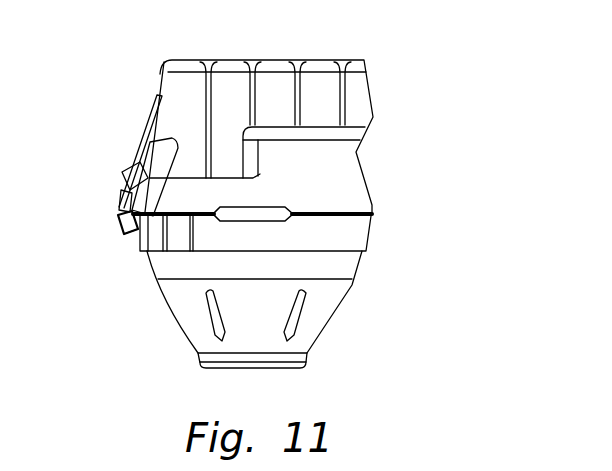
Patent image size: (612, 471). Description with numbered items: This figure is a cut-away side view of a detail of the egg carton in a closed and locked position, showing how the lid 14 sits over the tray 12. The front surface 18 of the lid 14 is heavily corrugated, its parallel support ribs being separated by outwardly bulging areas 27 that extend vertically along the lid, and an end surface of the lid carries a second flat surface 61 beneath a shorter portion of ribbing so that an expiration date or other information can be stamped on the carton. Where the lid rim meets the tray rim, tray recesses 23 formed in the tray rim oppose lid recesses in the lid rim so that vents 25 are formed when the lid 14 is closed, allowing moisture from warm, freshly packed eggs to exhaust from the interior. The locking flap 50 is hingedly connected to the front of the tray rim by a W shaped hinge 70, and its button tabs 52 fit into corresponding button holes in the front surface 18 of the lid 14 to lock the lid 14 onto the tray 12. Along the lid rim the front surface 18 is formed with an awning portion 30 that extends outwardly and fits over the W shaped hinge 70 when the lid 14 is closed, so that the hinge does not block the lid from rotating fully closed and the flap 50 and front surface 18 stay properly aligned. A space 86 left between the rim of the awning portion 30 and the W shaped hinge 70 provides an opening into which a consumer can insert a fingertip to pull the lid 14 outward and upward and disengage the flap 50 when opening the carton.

The tray 12 is at (184, 338).
The lid 14 is at (190, 60).
The front surface 18 is at (156, 102).
The tray recesses 23 is at (237, 220).
The vents 25 is at (290, 218).
The outwardly bulging areas 27 is at (277, 205).
The awning portion 30 is at (118, 203).
The locking flap 50 is at (150, 139).
The button tabs 52 is at (130, 168).
The second flat surface 61 is at (313, 160).
The W shaped hinge 70 is at (124, 236).
The space 86 is at (119, 220).